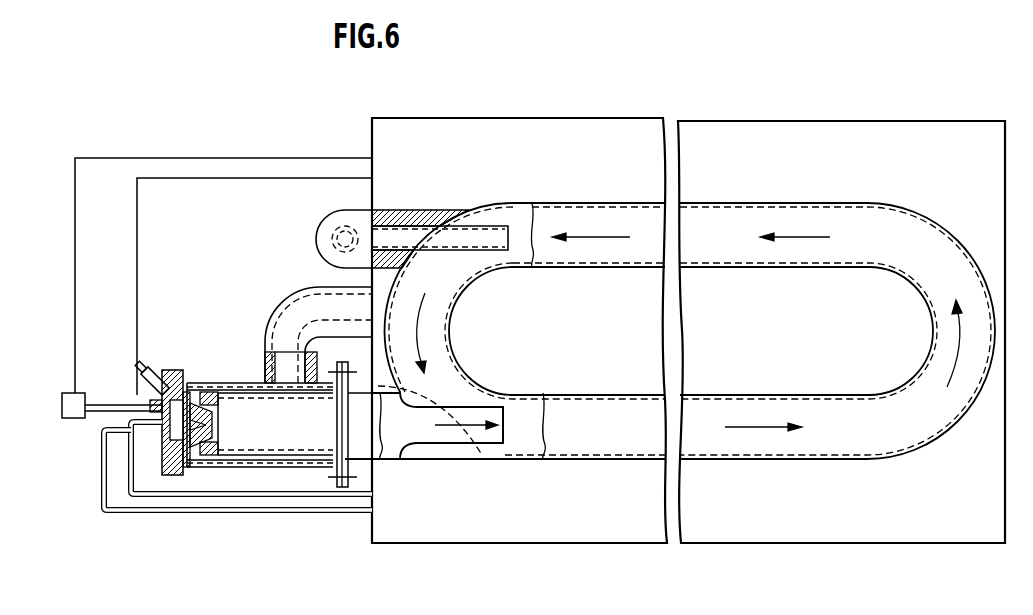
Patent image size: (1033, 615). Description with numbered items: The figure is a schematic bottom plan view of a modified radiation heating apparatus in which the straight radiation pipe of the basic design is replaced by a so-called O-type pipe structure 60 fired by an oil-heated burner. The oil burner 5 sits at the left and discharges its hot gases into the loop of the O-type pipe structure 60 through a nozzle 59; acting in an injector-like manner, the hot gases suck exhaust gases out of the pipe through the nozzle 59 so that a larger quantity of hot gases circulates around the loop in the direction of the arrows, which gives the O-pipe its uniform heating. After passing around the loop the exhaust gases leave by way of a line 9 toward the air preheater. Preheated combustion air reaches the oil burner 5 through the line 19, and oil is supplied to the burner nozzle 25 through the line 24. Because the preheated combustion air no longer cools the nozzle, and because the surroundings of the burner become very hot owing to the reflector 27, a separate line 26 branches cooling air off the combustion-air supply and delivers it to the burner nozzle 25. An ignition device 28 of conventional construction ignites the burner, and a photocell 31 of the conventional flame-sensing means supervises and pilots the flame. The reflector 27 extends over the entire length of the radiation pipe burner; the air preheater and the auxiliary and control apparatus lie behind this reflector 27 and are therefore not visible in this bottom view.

The oil burner 5 is at (170, 440).
The line 9 is at (320, 241).
The line 19 is at (285, 325).
The line 24 is at (245, 514).
The burner nozzle 25 is at (185, 392).
The line 26 is at (192, 500).
The reflector 27 is at (478, 545).
The ignition device 28 is at (135, 372).
The photocell 31 is at (62, 392).
The nozzle 59 is at (428, 445).
The O-type pipe structure 60 is at (770, 443).